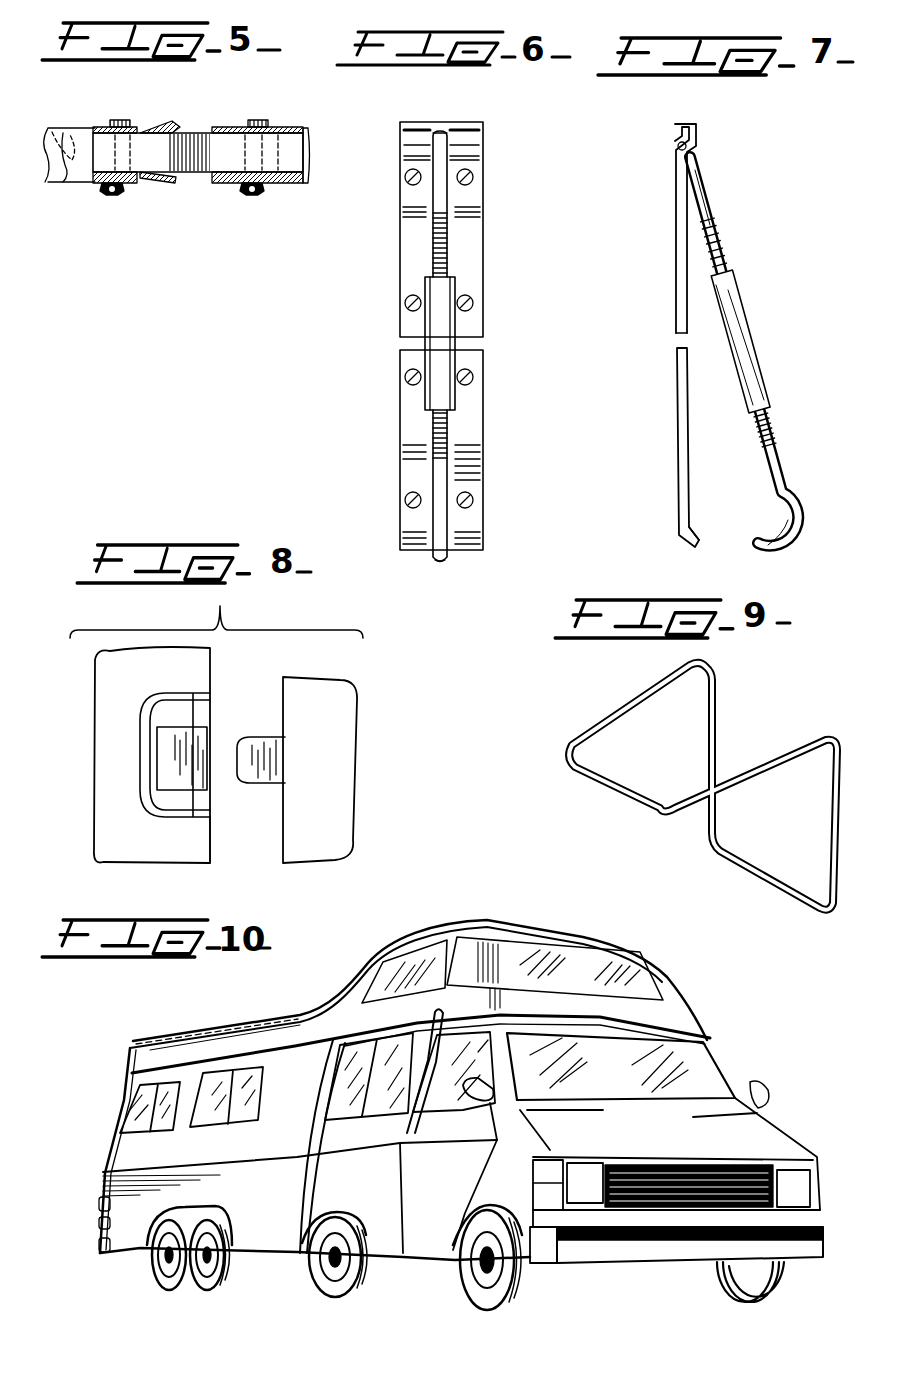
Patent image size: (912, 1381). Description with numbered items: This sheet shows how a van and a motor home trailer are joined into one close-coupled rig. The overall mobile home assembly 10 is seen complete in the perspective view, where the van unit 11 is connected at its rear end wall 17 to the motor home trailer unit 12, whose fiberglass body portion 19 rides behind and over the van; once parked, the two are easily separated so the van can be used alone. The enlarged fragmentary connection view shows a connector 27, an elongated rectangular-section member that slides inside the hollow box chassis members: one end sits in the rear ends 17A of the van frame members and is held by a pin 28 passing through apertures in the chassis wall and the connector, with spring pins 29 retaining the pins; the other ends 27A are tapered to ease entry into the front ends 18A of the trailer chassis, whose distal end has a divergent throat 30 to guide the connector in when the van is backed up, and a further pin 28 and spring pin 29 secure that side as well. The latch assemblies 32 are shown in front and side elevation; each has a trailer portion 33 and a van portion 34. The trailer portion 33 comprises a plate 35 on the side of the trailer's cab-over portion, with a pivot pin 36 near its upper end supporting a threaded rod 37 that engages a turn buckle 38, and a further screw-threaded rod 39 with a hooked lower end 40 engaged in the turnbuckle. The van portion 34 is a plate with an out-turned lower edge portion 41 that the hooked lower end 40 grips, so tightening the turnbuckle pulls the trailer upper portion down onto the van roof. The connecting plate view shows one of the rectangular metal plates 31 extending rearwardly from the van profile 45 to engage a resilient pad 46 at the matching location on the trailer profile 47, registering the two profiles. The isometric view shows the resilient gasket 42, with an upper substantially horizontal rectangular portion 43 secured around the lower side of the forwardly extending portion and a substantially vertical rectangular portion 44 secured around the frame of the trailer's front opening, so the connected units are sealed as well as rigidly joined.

In FIG. 10, the mobile home assembly 10 is at (447, 928).
In FIG. 10, the van unit 11 is at (461, 1100).
In FIG. 10, the motor home trailer unit 12 is at (258, 1037).
In FIG. 10, the body portion 19 is at (203, 1053).
In FIG. 8, the rear end wall 17 is at (334, 740).
In FIG. 5, the rear ends of chassis frame members 17A is at (305, 186).
In FIG. 5, the front ends of chassis members 18A is at (47, 127).
In FIG. 5, the connector 27 is at (195, 176).
In FIG. 5, the other ends of connectors 27A is at (93, 140).
In FIG. 5, the pin 28 is at (115, 120).
In FIG. 5, the spring pins 29 is at (117, 197).
In FIG. 5, the divergent throat 30 is at (172, 128).
In FIG. 8, the metal plates 31 is at (241, 742).
In FIG. 6, the latch assemblies 32 is at (455, 342).
In FIG. 6, the trailer portion 33 is at (393, 182).
In FIG. 7, the trailer portion 33 is at (671, 252).
In FIG. 6, the van portion 34 is at (487, 455).
In FIG. 7, the van portion 34 is at (676, 451).
In FIG. 6, the plate 35 is at (470, 132).
In FIG. 6, the pivot pin 36 is at (466, 148).
In FIG. 7, the pivot pin 36 is at (678, 142).
In FIG. 6, the threaded rod 37 is at (447, 240).
In FIG. 7, the threaded rod 37 is at (715, 238).
In FIG. 6, the turn buckle 38 is at (456, 318).
In FIG. 7, the turn buckle 38 is at (745, 290).
In FIG. 6, the screw-threaded rod 39 is at (430, 447).
In FIG. 7, the screw-threaded rod 39 is at (773, 430).
In FIG. 6, the hooked lower end 40 is at (437, 562).
In FIG. 7, the hooked lower end 40 is at (768, 554).
In FIG. 6, the out-turned lower edge portion 41 is at (401, 537).
In FIG. 7, the out-turned lower edge portion 41 is at (692, 530).
In FIG. 9, the gasket 42 is at (723, 776).
In FIG. 9, the upper substantially horizontal rectangular portion 43 is at (588, 767).
In FIG. 9, the substantially vertical rectangular portion 44 is at (838, 862).
In FIG. 8, the van profile 45 is at (285, 830).
In FIG. 8, the resilient pads 46 is at (200, 752).
In FIG. 8, the profile of the trailer unit 47 is at (212, 835).